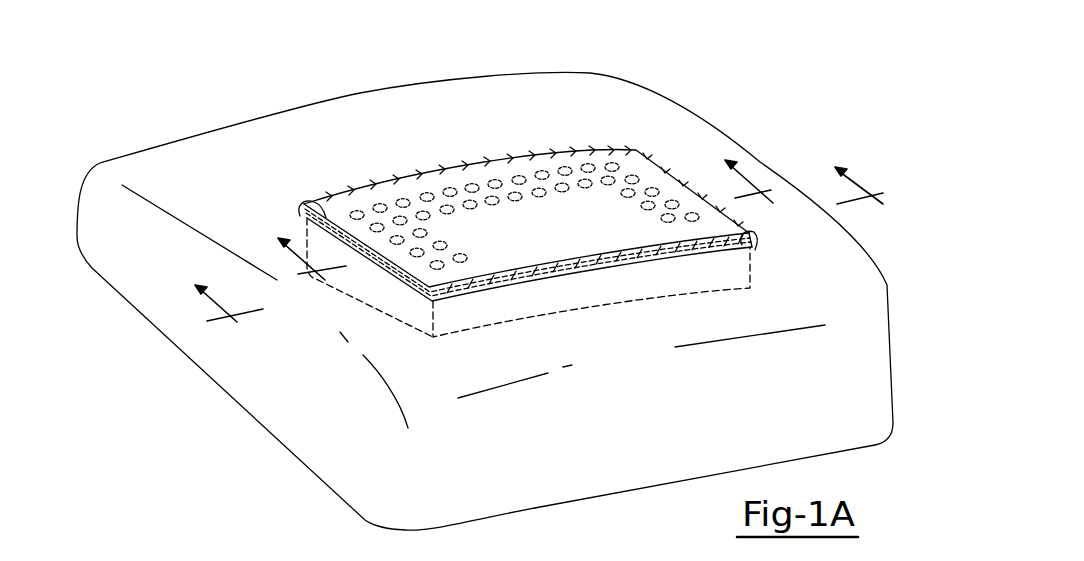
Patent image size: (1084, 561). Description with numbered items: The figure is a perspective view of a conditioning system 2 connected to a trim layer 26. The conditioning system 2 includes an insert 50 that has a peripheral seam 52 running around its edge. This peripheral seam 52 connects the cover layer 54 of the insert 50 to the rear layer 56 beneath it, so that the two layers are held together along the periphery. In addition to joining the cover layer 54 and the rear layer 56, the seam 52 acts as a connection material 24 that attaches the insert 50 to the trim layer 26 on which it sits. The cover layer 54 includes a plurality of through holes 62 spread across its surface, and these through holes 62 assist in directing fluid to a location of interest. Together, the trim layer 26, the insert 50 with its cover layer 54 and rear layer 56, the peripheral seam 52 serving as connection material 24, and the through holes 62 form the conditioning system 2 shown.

The conditioning system 2 is at (709, 60).
The trim layer 26 is at (187, 152).
The insert 50 is at (444, 163).
The peripheral seam 52 is at (333, 223).
The cover layer 54 is at (560, 168).
The rear layer 56 is at (555, 304).
The connection material 24 is at (575, 258).
The through holes 62 is at (423, 193).